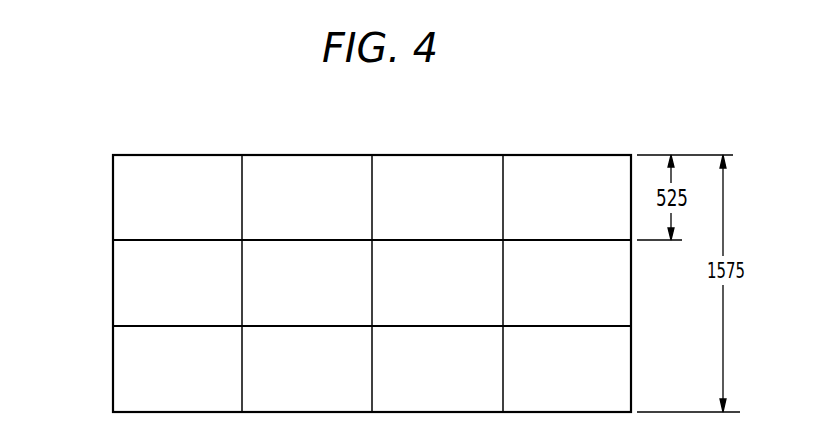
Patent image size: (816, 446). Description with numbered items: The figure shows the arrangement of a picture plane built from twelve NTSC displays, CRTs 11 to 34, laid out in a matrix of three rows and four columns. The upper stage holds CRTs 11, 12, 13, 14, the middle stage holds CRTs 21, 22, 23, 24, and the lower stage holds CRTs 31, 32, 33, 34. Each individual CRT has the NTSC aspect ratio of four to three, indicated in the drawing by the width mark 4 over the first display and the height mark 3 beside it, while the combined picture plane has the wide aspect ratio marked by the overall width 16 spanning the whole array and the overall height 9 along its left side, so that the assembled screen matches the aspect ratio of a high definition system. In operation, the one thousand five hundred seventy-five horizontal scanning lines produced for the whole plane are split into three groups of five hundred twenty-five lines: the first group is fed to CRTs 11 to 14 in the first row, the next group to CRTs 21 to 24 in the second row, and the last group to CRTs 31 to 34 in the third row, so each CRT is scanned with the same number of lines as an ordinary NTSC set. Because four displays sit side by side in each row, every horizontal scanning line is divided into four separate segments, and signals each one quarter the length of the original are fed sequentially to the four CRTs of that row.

The flat panel display cell array 16 is at (113, 155).
The cell width 4 is at (113, 155).
The cell height 3 is at (113, 157).
The panel height 9 is at (113, 155).
The CRT 11 is at (177, 197).
The CRT 12 is at (307, 197).
The CRT 13 is at (437, 197).
The CRT 14 is at (567, 197).
The CRT 21 is at (177, 283).
The CRT 22 is at (307, 283).
The CRT 23 is at (437, 283).
The CRT 24 is at (567, 283).
The CRT 31 is at (177, 369).
The CRT 32 is at (307, 369).
The CRT 33 is at (437, 369).
The CRT 34 is at (567, 369).